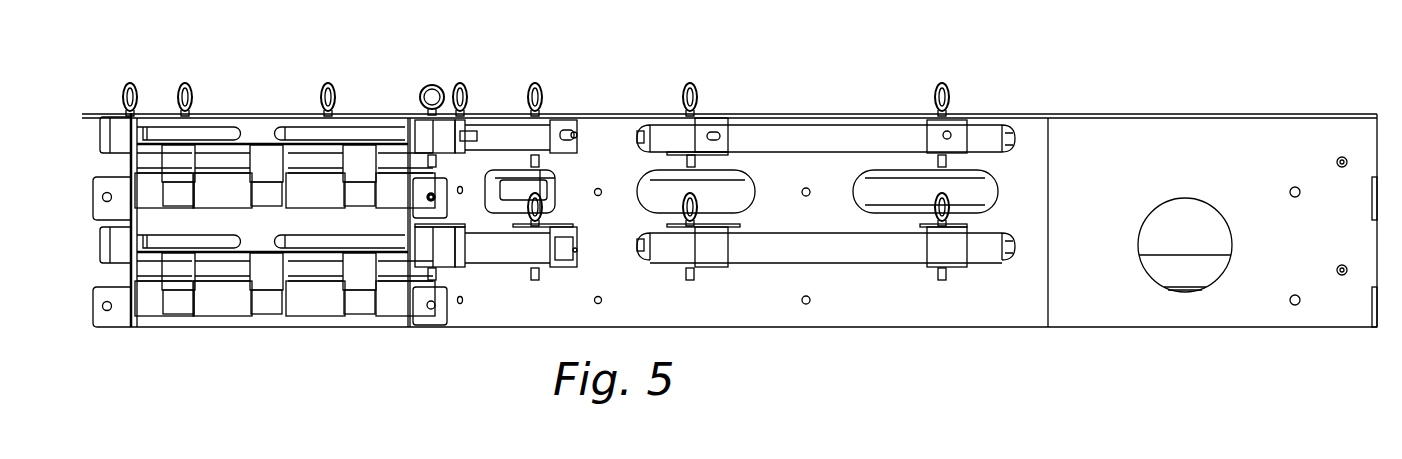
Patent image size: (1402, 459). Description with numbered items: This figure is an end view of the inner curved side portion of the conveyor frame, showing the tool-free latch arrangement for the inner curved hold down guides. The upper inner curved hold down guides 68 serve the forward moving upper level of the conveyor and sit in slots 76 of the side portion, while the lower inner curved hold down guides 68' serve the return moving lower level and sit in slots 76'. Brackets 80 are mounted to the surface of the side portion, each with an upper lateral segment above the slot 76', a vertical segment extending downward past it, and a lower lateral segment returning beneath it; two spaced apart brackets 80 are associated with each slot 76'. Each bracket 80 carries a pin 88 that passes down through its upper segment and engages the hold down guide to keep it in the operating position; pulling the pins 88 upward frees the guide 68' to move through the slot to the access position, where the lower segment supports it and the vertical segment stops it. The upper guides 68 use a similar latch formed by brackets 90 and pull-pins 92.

The inner curved hold down guide 68 is at (708, 104).
The inner curved hold down guide 68' is at (700, 304).
The slot 76 is at (1041, 106).
The slot 76' is at (1063, 306).
The bracket 80 is at (712, 258).
The pin 88 is at (693, 200).
The bracket 90 is at (716, 111).
The pull-pin 92 is at (679, 97).